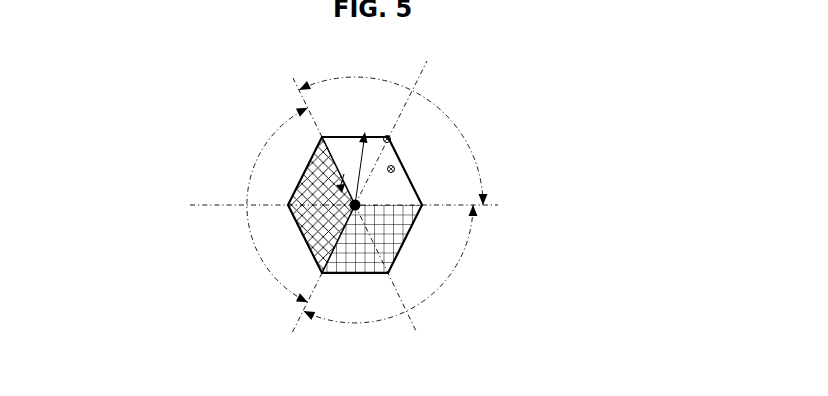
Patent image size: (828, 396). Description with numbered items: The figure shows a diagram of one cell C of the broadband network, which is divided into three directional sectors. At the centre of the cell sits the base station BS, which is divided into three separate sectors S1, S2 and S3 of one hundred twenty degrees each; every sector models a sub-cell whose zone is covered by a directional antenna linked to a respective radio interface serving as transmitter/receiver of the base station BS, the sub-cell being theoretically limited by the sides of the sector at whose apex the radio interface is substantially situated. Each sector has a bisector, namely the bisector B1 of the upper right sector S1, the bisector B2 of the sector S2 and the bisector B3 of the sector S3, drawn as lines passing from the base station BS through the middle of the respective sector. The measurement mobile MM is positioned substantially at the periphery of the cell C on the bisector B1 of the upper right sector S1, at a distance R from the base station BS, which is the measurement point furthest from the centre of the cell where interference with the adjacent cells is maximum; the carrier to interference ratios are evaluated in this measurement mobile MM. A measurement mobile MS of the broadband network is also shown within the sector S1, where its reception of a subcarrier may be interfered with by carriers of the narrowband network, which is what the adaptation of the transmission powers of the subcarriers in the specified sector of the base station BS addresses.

The cell C is at (623, 124).
The bisector B1 is at (398, 122).
The bisector B2 is at (392, 286).
The bisector B3 is at (330, 209).
The sector S1 is at (393, 141).
The sector S2 is at (407, 264).
The sector S3 is at (243, 205).
The distance R is at (352, 168).
The measurement mobile MM is at (386, 134).
The measurement mobile MS is at (392, 165).
The base station BS is at (362, 199).